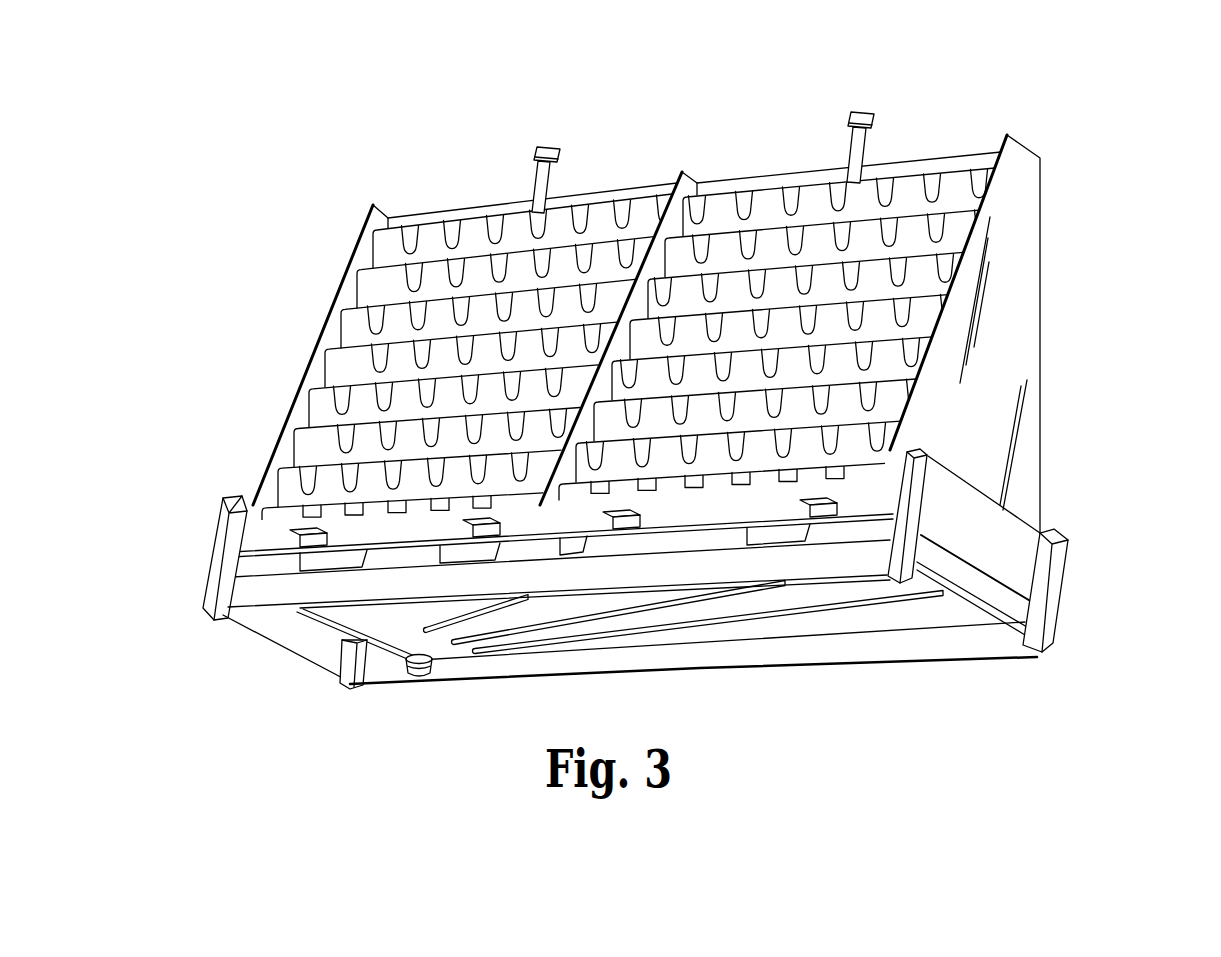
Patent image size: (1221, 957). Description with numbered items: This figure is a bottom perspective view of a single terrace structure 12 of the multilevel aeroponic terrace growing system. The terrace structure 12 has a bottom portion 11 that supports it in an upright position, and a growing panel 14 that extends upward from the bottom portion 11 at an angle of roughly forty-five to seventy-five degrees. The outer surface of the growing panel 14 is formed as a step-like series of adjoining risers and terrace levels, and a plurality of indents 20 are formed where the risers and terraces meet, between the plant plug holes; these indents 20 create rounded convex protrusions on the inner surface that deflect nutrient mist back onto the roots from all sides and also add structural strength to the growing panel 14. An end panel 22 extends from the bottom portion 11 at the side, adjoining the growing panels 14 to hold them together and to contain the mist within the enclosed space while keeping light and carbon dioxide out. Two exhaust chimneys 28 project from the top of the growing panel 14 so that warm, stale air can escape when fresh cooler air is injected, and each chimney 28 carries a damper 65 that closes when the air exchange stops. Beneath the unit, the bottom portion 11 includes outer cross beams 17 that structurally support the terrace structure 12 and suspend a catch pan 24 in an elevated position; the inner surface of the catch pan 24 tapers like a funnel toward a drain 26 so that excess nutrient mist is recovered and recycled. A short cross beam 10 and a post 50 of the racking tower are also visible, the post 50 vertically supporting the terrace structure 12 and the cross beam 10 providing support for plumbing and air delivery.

The short cross beam 10 is at (1007, 595).
The bottom portion 11 is at (958, 680).
The terrace structure 12 is at (305, 228).
The growing panel 14 is at (614, 258).
The outer cross beam 17 is at (280, 588).
The indents 20 is at (550, 302).
The end panel 22 is at (1020, 337).
The catch pan 24 is at (787, 625).
The drain 26 is at (418, 673).
The exhaust chimney 28 is at (538, 183).
The post 50 is at (1055, 588).
The damper 65 is at (548, 146).